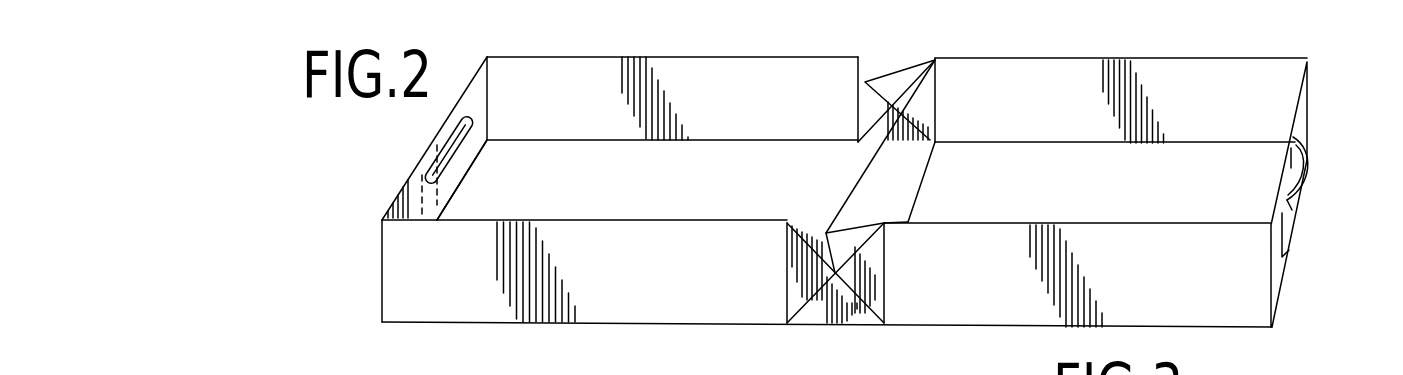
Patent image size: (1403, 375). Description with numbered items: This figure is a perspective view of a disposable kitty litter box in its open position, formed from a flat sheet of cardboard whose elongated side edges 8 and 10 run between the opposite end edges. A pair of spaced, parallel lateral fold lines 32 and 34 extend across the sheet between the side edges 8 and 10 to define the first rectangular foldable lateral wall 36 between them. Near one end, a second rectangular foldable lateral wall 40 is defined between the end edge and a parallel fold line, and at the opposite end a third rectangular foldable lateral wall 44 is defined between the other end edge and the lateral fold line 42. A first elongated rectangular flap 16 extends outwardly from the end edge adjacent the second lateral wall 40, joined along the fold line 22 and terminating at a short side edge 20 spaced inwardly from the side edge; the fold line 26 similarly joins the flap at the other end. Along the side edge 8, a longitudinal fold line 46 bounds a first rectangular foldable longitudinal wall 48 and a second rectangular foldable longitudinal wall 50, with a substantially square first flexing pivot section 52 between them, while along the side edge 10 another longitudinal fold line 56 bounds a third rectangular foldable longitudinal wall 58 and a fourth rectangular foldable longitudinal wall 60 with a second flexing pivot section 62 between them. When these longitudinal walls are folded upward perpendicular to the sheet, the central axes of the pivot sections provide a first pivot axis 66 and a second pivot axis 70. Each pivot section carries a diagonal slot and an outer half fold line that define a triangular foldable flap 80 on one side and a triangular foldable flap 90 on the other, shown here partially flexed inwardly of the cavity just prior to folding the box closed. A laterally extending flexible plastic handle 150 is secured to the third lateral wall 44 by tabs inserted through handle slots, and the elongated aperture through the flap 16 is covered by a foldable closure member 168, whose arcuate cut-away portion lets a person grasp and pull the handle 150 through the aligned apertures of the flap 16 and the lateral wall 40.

The elongated side edge 8 is at (557, 220).
The elongated side edge 10 is at (762, 58).
The first elongated rectangular flap 16 is at (417, 193).
The short side edge 20 is at (488, 97).
The fold line 22 is at (453, 107).
The fold line 26 is at (1295, 108).
The lateral fold line 32 is at (838, 200).
The lateral fold line 34 is at (932, 157).
The first rectangular foldable lateral wall 36 is at (898, 200).
The second rectangular foldable lateral wall 40 is at (382, 253).
The lateral fold line 42 is at (1292, 223).
The third rectangular foldable lateral wall 44 is at (1283, 257).
The longitudinal fold line 46 is at (540, 323).
The first rectangular foldable longitudinal wall 48 is at (650, 290).
The second rectangular foldable longitudinal wall 50 is at (1032, 298).
The first flexing pivot section 52 is at (832, 325).
The longitudinal fold line 56 is at (607, 142).
The third rectangular foldable longitudinal wall 58 is at (680, 80).
The fourth rectangular foldable longitudinal wall 60 is at (1170, 83).
The second flexing pivot section 62 is at (887, 143).
The first pivot axis 66 is at (830, 280).
The second pivot axis 70 is at (903, 113).
The triangular foldable flap 80 is at (850, 242).
The triangular foldable flap 90 is at (895, 73).
The flexible plastic handle 150 is at (1308, 173).
The closure member 168 is at (462, 140).